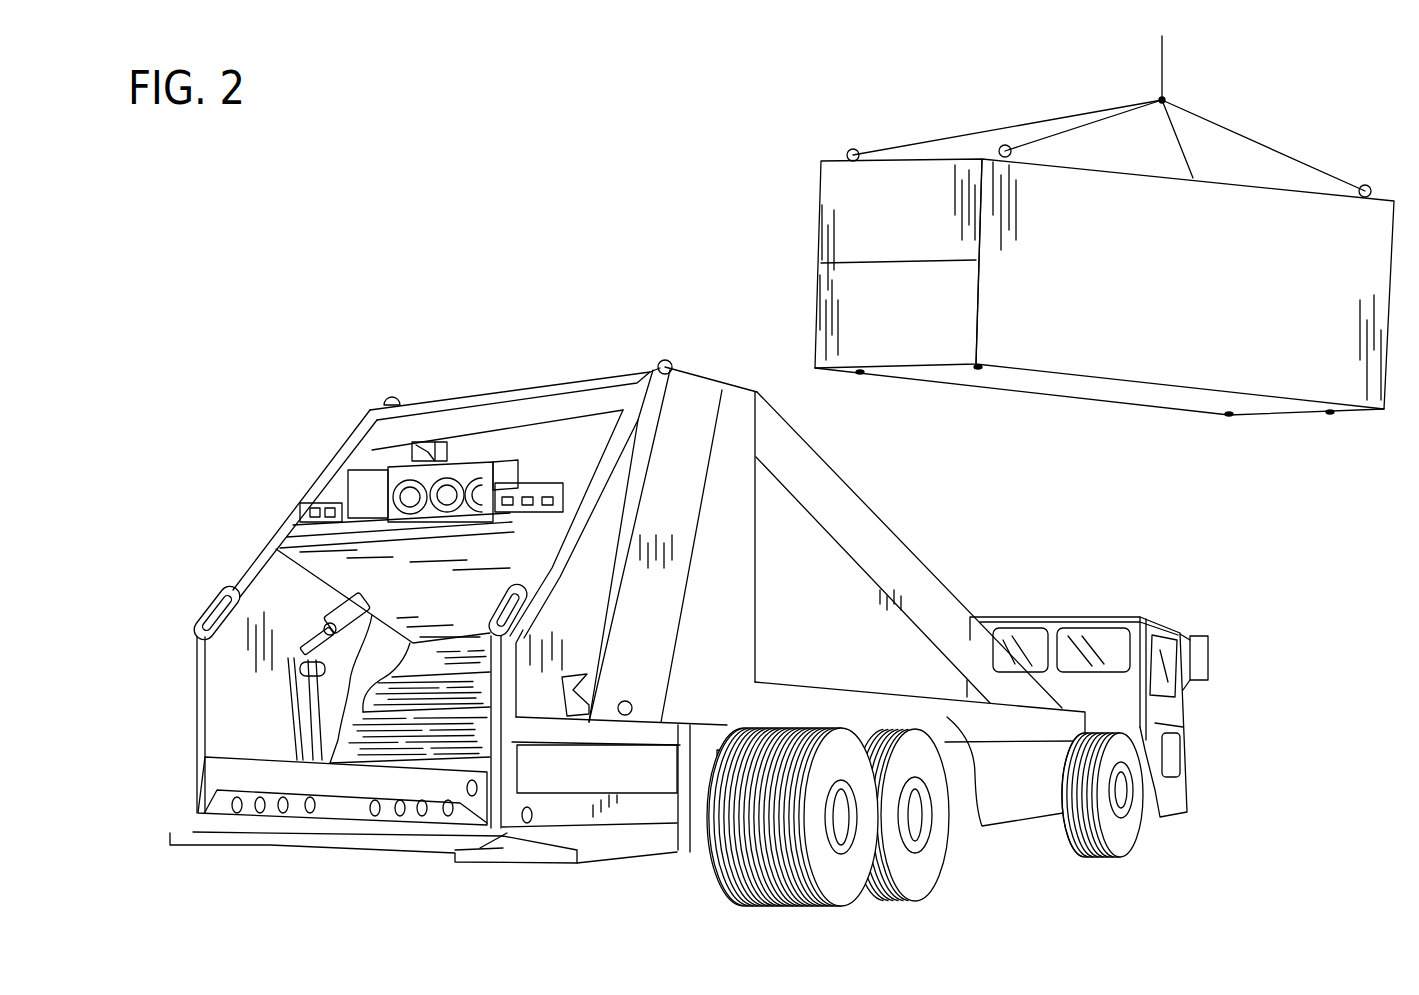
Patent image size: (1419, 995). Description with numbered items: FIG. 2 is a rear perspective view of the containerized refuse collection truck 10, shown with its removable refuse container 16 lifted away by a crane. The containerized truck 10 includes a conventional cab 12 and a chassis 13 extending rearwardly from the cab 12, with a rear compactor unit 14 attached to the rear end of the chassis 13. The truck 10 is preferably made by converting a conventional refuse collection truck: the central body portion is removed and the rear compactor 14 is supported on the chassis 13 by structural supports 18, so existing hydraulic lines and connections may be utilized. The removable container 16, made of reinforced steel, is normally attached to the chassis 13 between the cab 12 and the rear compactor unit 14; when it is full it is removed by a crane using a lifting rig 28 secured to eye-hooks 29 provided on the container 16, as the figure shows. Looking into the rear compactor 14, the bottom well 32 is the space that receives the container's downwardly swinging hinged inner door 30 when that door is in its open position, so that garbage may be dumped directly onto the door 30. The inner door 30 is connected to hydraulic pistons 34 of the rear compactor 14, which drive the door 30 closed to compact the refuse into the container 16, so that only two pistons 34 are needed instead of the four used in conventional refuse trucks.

The containerized truck 10 is at (433, 252).
The cab 12 is at (1157, 622).
The chassis 13 is at (975, 815).
The rear compactor unit 14 is at (335, 468).
The removable refuse container 16 is at (1056, 250).
The structural supports 18 is at (883, 523).
The lifting rig 28 is at (1162, 62).
The eye-hooks 29 is at (850, 152).
The inner door 30 is at (880, 305).
The bottom well 32 is at (247, 760).
The hydraulic pistons 34 is at (338, 610).